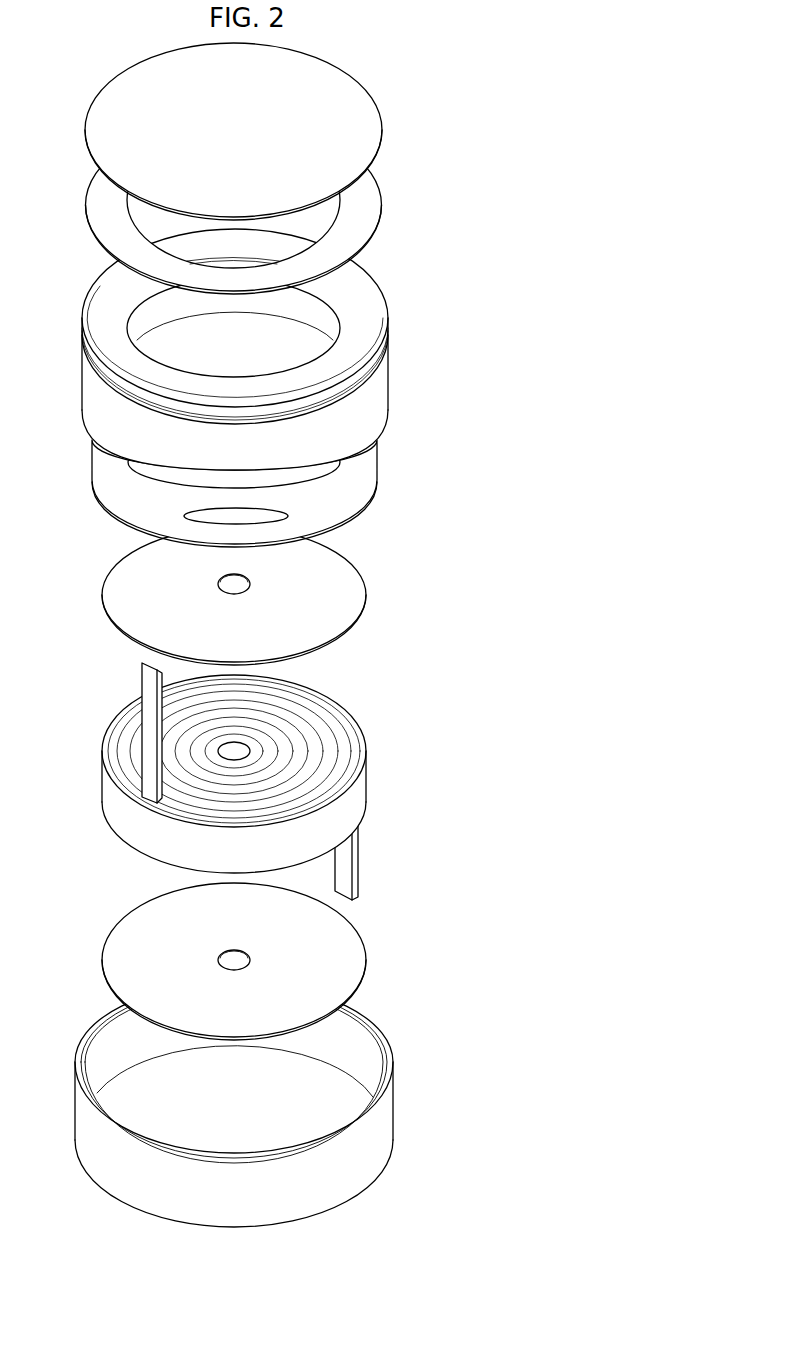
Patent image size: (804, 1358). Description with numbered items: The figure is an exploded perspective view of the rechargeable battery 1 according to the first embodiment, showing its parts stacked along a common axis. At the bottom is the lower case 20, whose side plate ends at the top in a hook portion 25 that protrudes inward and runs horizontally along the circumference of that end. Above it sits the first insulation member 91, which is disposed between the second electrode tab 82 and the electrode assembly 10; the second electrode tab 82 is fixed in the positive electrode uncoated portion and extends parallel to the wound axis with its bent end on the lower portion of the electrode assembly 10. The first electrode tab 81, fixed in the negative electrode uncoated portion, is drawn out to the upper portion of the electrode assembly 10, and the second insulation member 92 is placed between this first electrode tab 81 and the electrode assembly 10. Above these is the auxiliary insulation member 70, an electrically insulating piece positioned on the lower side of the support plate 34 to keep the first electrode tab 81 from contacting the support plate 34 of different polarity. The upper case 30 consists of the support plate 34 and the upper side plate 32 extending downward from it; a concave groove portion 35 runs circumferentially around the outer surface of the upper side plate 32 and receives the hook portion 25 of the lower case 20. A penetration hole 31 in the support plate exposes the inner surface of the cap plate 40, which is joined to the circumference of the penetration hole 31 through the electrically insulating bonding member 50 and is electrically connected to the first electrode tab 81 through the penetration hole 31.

The rechargeable battery 1 is at (57, 69).
The electrode assembly 10 is at (388, 778).
The lower case 20 is at (413, 1110).
The hook portion 25 is at (385, 1045).
The upper case 30 is at (408, 308).
The penetration hole 31 is at (153, 320).
The upper side plate 32 is at (382, 410).
The support plate 34 is at (362, 295).
The groove portion 35 is at (367, 383).
The cap plate 40 is at (377, 125).
The bonding member 50 is at (377, 202).
The auxiliary insulation member 70 is at (370, 462).
The first electrode tab 81 is at (141, 680).
The second electrode tab 82 is at (358, 878).
The first insulation member 91 is at (358, 958).
The second insulation member 92 is at (358, 582).